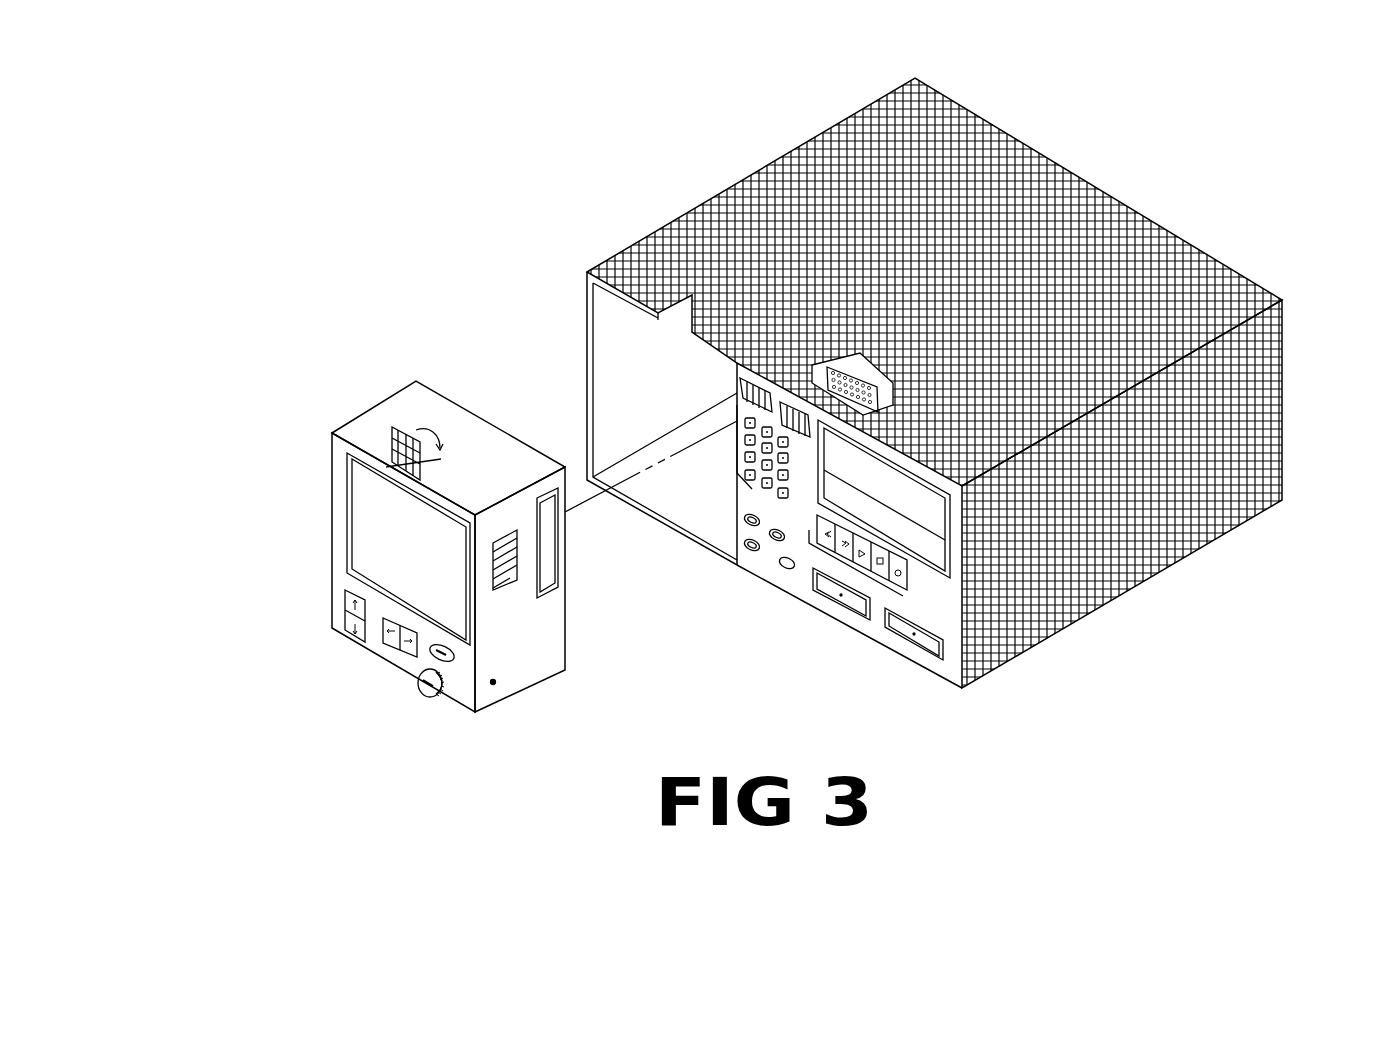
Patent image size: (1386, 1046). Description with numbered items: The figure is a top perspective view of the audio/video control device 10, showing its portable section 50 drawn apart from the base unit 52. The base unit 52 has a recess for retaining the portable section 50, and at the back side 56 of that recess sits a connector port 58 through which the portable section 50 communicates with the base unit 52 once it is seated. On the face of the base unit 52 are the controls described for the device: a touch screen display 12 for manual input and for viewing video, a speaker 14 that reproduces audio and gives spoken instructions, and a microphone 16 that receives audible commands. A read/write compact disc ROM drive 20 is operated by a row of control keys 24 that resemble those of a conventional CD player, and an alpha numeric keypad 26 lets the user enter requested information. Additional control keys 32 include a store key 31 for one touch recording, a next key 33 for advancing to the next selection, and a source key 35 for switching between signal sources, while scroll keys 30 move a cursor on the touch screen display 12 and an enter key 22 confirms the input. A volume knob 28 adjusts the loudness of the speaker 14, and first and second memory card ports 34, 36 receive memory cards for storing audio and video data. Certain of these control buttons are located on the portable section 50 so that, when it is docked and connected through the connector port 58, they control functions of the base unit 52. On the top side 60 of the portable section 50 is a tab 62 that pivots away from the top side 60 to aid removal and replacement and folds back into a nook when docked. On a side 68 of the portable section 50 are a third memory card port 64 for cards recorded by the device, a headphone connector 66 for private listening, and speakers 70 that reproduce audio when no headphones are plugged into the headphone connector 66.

The audio/video control device 10 is at (402, 203).
The touch screen display 12 is at (360, 500).
The speaker 14 is at (737, 394).
The microphone 16 is at (732, 358).
The read/write compact disc ROM drive 20 is at (930, 505).
The enter key 22 is at (935, 545).
The control keys 24 is at (878, 595).
The alpha numeric keypad 26 is at (735, 438).
The volume knob 28 is at (429, 697).
The scroll keys 30 is at (346, 632).
The store key 31 is at (772, 541).
The additional control keys 32 is at (427, 652).
The next key 33 is at (745, 520).
The first memory card port 34 is at (837, 600).
The source key 35 is at (752, 552).
The second memory card port 36 is at (913, 648).
The portable section 50 is at (333, 437).
The base unit 52 is at (1040, 150).
The back side of the recess 56 is at (857, 360).
The connector port 58 is at (813, 360).
The top side 60 is at (382, 407).
The tab 62 is at (405, 430).
The third memory card port 64 is at (550, 513).
The headphone connector 66 is at (493, 686).
The side 68 is at (567, 620).
The speakers 70 is at (508, 588).